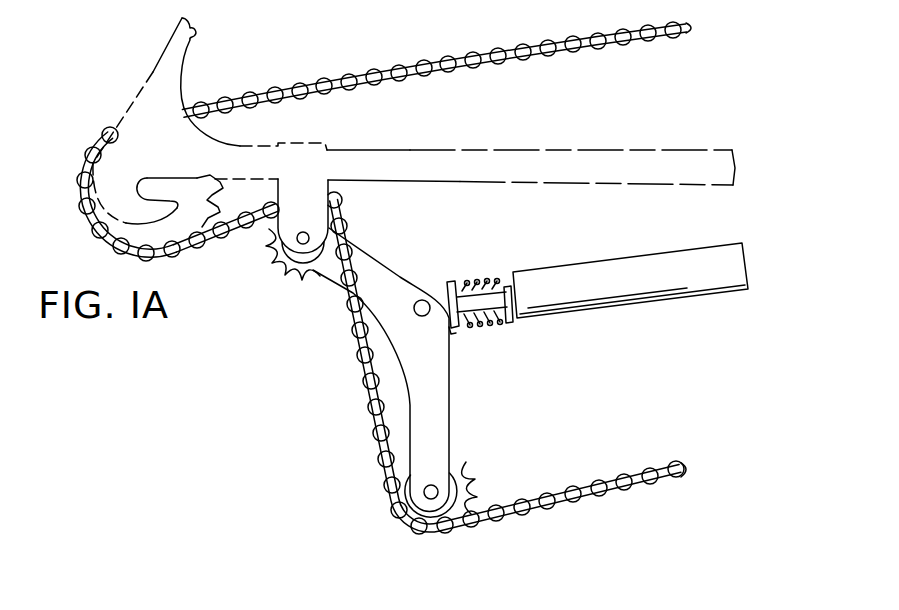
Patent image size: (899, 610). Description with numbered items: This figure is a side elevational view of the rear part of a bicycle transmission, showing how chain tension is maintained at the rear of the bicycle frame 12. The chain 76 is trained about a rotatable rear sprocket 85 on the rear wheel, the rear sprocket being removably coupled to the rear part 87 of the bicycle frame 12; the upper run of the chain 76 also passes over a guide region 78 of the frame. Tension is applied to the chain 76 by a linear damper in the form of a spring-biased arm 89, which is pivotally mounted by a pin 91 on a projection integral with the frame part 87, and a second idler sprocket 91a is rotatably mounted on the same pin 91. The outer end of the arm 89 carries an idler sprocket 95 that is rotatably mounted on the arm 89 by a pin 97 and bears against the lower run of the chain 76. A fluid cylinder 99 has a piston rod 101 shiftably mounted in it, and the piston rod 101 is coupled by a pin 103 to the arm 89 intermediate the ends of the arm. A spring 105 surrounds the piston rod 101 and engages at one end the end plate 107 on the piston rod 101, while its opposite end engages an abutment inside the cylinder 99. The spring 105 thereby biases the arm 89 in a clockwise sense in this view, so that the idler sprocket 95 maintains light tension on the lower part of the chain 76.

The bicycle frame 12 is at (413, 114).
The chain 76 is at (577, 33).
The chain guide 78 is at (166, 81).
The rear sprocket 85 is at (163, 227).
The rear part of bicycle frame 87 is at (250, 157).
The spring-biased arm 89 is at (432, 415).
The pin 91 is at (300, 245).
The second idler sprocket 91a is at (273, 257).
The idler sprocket 95 is at (467, 483).
The pin 97 is at (435, 484).
The fluid cylinder 99 is at (613, 290).
The piston rod 101 is at (500, 280).
The pin 103 is at (458, 348).
The spring 105 is at (492, 320).
The end plate 107 is at (448, 282).